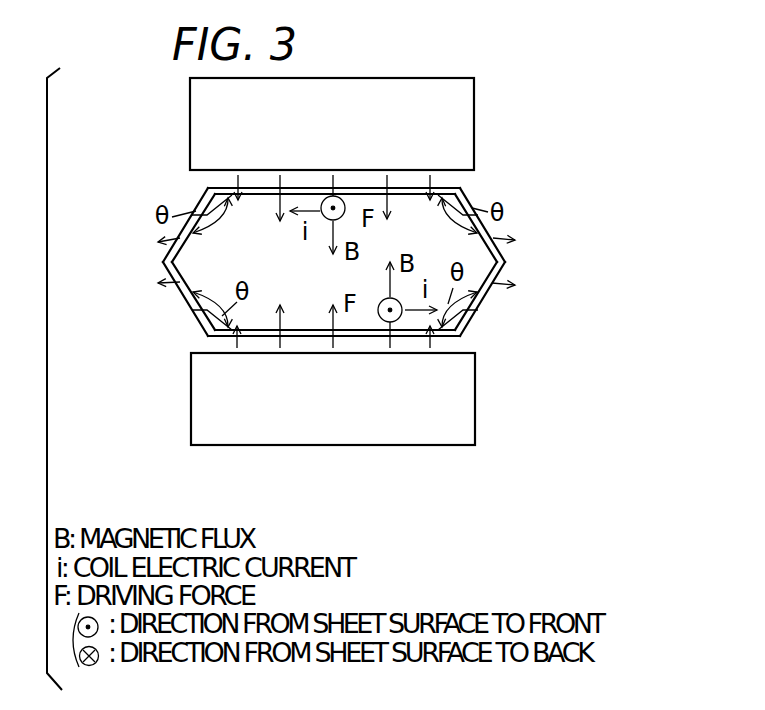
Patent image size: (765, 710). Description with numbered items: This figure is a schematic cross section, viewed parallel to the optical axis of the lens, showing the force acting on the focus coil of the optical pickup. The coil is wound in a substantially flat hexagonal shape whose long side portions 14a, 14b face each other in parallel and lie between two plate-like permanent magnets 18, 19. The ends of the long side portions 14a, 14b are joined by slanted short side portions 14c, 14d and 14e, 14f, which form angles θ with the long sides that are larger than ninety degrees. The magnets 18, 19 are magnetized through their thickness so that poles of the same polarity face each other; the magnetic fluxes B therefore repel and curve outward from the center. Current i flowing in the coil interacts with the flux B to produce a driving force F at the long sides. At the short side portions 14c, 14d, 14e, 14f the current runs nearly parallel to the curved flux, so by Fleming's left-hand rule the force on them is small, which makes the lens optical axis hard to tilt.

The long side portion 14a is at (410, 336).
The long side portion 14b is at (403, 190).
The short side portion 14c is at (192, 307).
The short side portion 14d is at (190, 212).
The short side portion 14e is at (480, 305).
The short side portion 14f is at (505, 258).
The magnet 18 is at (465, 424).
The magnet 19 is at (465, 118).